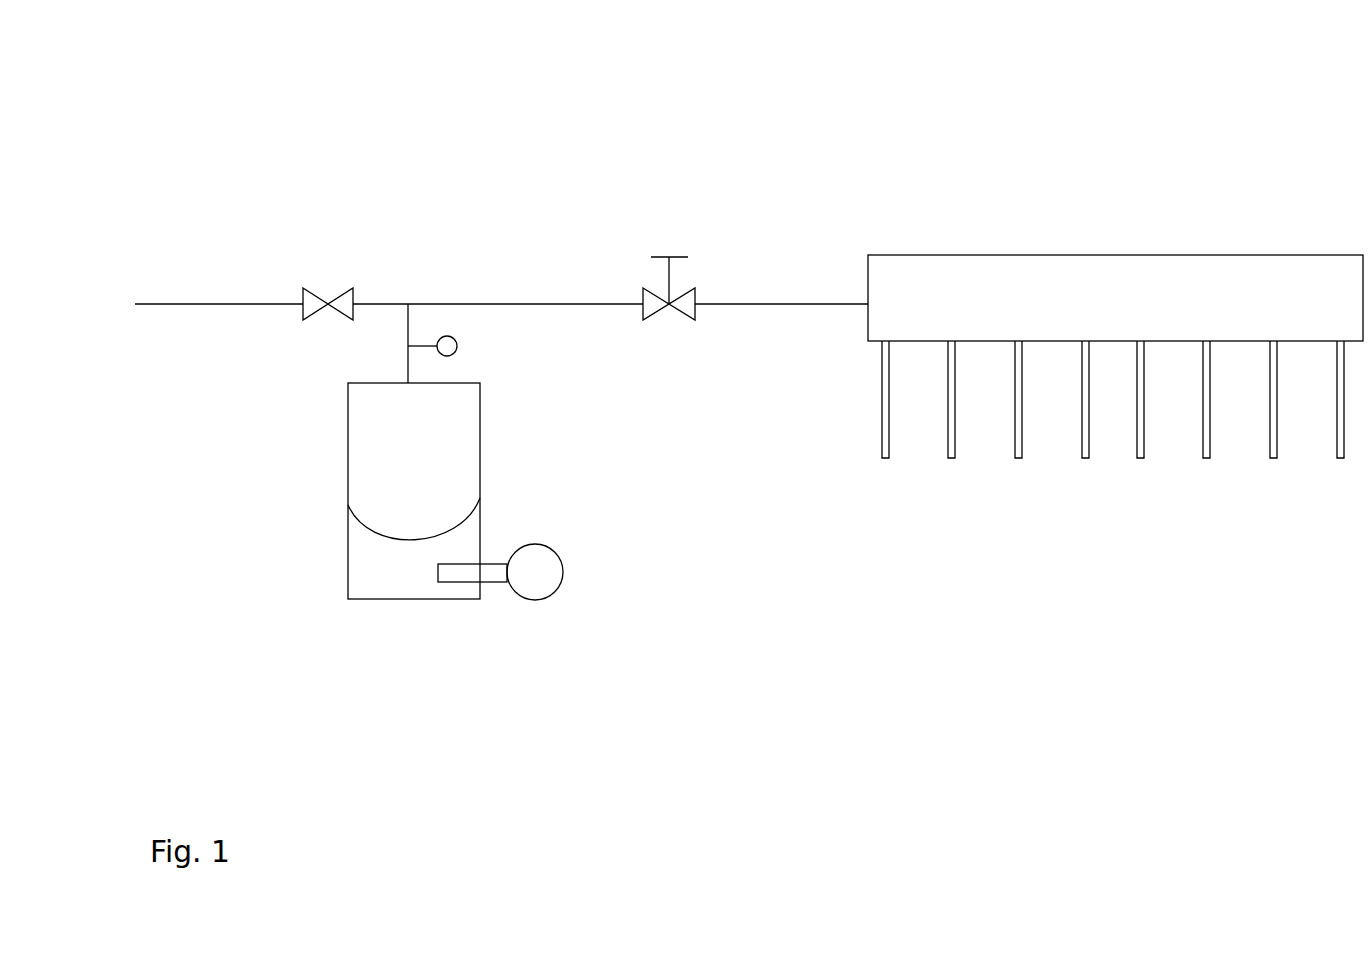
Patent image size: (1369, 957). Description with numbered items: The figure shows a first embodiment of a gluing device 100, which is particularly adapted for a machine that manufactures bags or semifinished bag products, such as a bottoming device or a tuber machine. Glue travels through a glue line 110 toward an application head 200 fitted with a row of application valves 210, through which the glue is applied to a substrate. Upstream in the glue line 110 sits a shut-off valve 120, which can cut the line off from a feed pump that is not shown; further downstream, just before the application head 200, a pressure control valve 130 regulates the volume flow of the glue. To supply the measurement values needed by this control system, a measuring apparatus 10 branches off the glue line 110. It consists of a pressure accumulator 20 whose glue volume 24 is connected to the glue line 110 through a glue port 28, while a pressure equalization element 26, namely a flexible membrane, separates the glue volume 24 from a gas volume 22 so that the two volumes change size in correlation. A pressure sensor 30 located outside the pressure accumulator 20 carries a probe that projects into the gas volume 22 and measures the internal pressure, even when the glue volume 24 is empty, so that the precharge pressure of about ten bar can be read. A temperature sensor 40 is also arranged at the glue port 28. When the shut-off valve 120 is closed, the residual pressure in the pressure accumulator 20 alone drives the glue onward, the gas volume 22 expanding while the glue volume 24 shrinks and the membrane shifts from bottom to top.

The measuring apparatus 10 is at (379, 622).
The pressure accumulator 20 is at (348, 485).
The gas volume 22 is at (406, 581).
The glue volume 24 is at (444, 456).
The pressure equalization element 26 is at (450, 533).
The glue port 28 is at (408, 366).
The pressure sensor 30 is at (545, 574).
The temperature sensor 40 is at (457, 347).
The gluing device 100 is at (746, 156).
The glue line 110 is at (448, 300).
The shut-off valve 120 is at (316, 299).
The pressure control valve 130 is at (655, 300).
The application head 200 is at (1082, 255).
The application valve 210 is at (1086, 458).